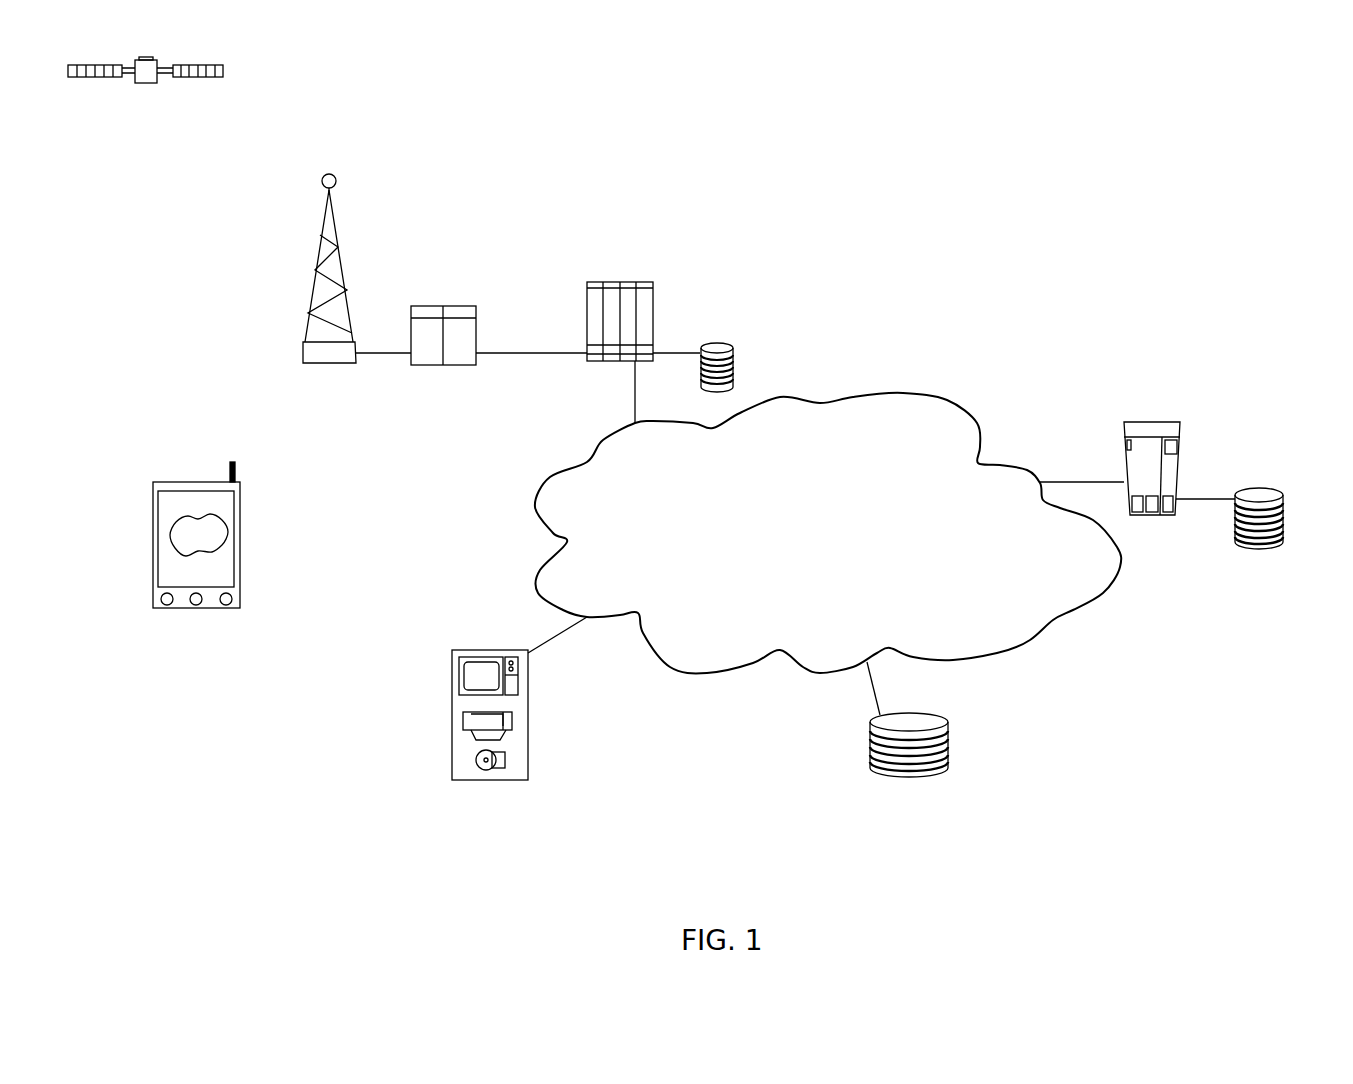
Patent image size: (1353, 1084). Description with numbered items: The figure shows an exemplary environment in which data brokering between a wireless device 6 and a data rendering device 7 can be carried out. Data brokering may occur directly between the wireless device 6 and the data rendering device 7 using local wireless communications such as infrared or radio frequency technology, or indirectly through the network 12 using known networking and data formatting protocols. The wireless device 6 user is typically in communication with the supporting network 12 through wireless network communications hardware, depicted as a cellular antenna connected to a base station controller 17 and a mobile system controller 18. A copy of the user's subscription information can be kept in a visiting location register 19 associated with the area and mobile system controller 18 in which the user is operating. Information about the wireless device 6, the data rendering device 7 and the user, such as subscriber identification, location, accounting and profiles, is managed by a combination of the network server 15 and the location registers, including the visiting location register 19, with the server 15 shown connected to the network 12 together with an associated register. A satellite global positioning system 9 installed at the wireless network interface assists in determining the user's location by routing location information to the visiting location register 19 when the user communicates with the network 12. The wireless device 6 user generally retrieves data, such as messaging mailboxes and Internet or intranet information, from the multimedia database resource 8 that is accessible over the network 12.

The wireless device 6 is at (240, 518).
The data rendering device 7 is at (452, 683).
The multimedia database resource 8 is at (898, 774).
The satellite global positioning system 9 is at (150, 82).
The network 12 is at (801, 515).
The network server 15 is at (1148, 422).
The base station controller 17 is at (421, 306).
The mobile system controller 18 is at (590, 283).
The visiting location register 19 is at (727, 345).